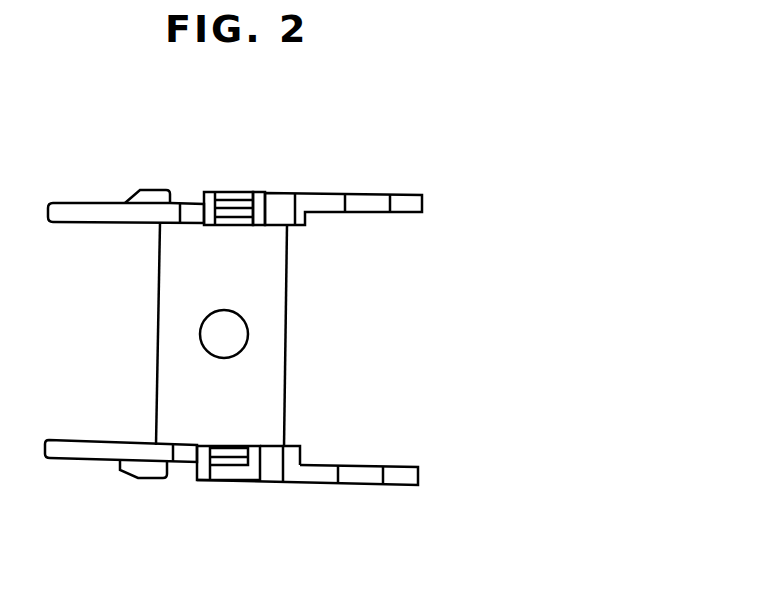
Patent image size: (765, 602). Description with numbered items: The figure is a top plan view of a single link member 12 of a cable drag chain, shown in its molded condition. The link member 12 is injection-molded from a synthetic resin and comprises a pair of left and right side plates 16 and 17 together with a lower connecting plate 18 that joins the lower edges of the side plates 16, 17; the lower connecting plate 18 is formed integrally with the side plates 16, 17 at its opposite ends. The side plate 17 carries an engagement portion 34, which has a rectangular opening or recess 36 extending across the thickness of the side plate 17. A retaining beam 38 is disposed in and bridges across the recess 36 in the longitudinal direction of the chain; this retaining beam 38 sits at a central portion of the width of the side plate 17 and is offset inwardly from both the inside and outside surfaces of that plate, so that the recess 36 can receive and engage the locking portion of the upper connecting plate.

The link member 12 is at (399, 167).
The side plate 16 is at (64, 453).
The side plate 17 is at (68, 211).
The lower connecting plate 18 is at (267, 390).
The engagement portion 34 is at (249, 191).
The recess 36 is at (228, 191).
The retaining beam 38 is at (266, 195).